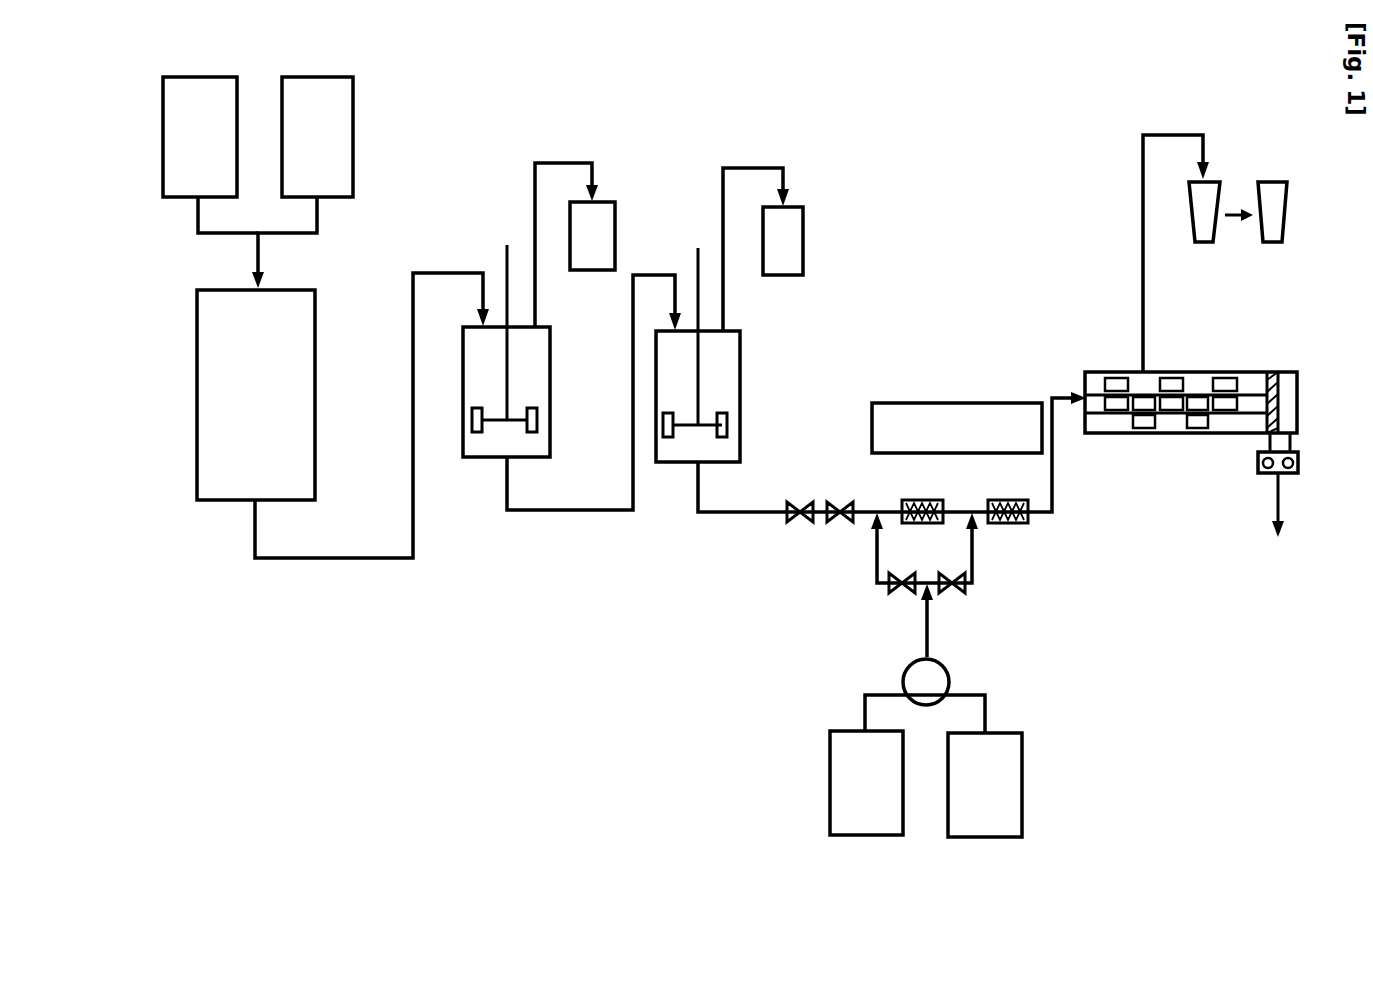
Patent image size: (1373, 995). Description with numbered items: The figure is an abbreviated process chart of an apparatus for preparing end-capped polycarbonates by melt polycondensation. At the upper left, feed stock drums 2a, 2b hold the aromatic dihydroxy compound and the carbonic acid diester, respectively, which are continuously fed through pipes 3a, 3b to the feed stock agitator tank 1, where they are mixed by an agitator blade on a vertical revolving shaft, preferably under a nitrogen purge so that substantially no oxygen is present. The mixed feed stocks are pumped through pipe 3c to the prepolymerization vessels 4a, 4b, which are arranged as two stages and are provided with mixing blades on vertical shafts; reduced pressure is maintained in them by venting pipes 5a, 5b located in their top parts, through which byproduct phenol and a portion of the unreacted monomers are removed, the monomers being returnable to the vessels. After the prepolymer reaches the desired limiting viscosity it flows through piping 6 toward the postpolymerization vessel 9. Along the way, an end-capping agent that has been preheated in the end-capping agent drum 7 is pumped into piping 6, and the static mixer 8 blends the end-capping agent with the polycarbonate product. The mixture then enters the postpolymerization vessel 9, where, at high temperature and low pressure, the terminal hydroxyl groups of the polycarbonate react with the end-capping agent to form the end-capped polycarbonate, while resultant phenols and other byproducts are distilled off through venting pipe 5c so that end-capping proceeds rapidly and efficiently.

The feed stock agitator tank 1 is at (206, 385).
The feed stock drum 2a is at (163, 98).
The feed stock drum 2b is at (353, 96).
The pipe 3a is at (198, 216).
The pipe 3b is at (317, 222).
The pipe 3c is at (255, 532).
The prepolymerization vessel 4a is at (527, 354).
The prepolymerization vessel 4b is at (717, 360).
The venting pipe 5a is at (535, 192).
The venting pipe 5b is at (723, 196).
The venting pipe 5c is at (1203, 140).
The piping 6 is at (635, 500).
The end-capping agent drum 7 is at (1008, 785).
The static mixer 8 is at (1033, 518).
The postpolymerization vessel 9 is at (1250, 372).